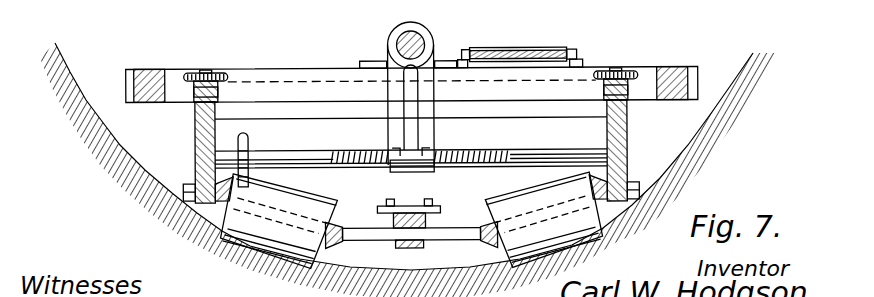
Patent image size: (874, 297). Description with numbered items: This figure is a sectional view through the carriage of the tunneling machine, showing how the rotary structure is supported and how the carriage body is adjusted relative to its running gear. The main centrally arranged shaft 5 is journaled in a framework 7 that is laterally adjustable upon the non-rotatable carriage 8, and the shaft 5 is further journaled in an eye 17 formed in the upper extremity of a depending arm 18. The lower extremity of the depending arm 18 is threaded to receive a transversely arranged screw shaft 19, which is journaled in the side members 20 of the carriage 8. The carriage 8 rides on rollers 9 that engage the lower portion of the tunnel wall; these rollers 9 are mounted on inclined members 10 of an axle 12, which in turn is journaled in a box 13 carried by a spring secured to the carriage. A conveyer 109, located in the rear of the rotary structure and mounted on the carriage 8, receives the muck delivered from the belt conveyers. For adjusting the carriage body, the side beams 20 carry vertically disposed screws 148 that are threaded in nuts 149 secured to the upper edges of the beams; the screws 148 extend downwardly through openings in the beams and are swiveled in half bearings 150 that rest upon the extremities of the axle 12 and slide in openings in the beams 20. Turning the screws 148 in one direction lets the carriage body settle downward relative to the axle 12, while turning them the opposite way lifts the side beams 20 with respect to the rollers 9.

The main shaft 5 is at (397, 43).
The framework 7 is at (632, 63).
The carriage 8 is at (626, 158).
The rollers 9 is at (326, 210).
The inclined members 10 is at (341, 212).
The axle 12 is at (360, 241).
The box 13 is at (409, 246).
The eye 17 is at (433, 40).
The depending arm 18 is at (434, 124).
The screw shaft 19 is at (350, 150).
The side members 20 is at (196, 133).
The conveyer 109 is at (536, 47).
The screws 148 is at (187, 69).
The nuts 149 is at (215, 92).
The half bearings 150 is at (192, 183).